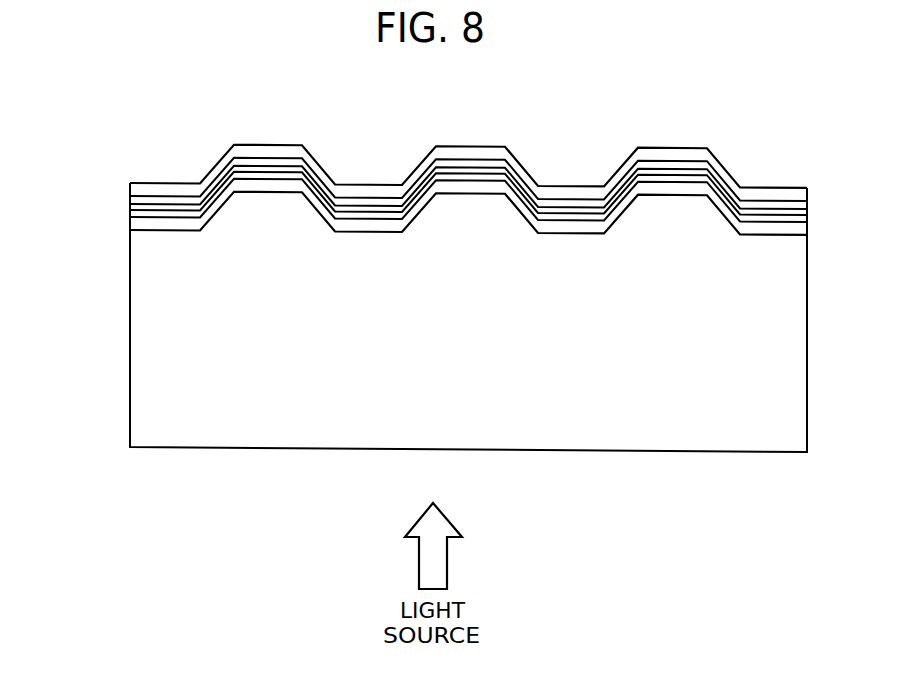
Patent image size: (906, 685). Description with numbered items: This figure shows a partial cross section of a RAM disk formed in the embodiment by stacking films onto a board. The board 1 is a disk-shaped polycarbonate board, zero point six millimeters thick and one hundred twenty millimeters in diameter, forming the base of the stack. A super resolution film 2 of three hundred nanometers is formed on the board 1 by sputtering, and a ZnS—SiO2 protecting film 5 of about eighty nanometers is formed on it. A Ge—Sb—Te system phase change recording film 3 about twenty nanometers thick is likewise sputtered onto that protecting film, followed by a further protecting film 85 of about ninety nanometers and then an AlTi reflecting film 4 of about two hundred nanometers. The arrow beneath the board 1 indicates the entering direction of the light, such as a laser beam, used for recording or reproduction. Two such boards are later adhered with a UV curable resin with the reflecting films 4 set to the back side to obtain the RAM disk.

The board 1 is at (143, 368).
The super resolution film 2 is at (149, 223).
The recording film 3 is at (138, 211).
The reflecting film 4 is at (163, 191).
The protecting film 5 is at (136, 217).
The protecting film 85 is at (138, 200).